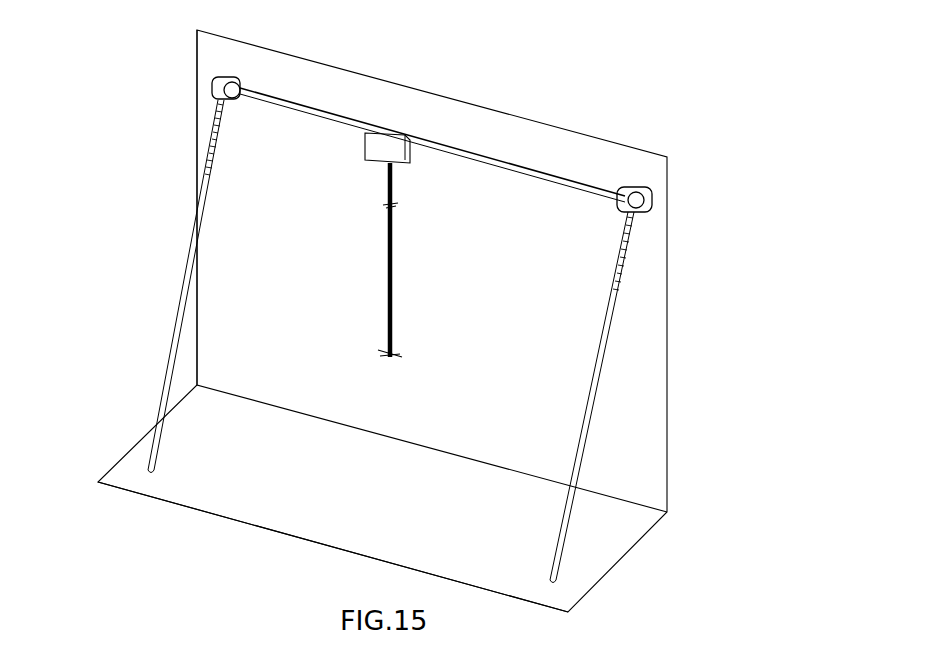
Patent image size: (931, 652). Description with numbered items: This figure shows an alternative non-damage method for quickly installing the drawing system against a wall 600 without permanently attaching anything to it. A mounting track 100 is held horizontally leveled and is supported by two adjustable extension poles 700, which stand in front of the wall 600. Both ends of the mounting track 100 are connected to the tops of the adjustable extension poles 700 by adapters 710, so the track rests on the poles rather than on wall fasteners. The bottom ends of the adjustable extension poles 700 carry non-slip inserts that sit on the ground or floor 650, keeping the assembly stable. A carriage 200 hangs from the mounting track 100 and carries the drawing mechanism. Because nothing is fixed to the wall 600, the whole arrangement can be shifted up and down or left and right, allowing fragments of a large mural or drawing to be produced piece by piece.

The mounting track 100 is at (503, 158).
The carriage with pole 200 is at (388, 147).
The wall 600 is at (635, 465).
The floor 650 is at (350, 523).
The adjustable extension pole 700 is at (175, 330).
The adapter 710 is at (222, 88).